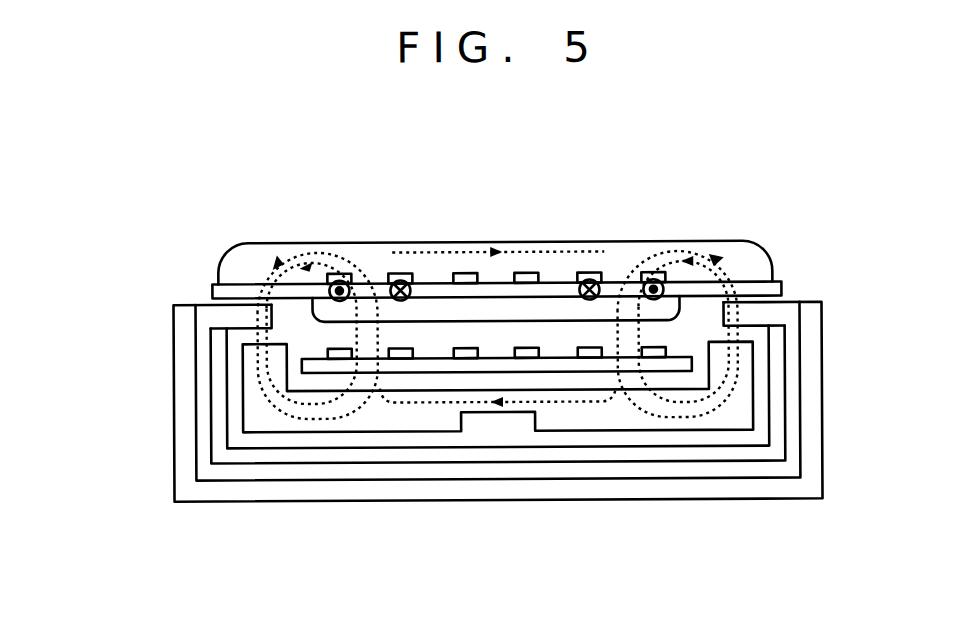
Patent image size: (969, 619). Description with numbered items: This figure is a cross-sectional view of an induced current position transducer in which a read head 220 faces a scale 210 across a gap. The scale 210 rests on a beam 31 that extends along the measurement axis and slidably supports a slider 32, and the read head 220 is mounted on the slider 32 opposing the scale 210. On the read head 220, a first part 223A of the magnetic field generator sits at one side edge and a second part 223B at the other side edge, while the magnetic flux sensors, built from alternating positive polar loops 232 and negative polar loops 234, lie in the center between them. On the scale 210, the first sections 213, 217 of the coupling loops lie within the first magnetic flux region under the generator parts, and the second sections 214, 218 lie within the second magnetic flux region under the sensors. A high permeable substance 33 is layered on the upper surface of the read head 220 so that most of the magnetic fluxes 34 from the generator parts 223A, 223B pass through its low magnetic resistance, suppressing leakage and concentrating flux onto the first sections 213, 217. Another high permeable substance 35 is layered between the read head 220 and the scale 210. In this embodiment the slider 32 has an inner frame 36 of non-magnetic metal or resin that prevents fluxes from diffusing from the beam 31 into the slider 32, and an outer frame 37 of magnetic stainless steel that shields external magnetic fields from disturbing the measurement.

The beam 31 is at (737, 413).
The slider 32 is at (212, 313).
The high permeable substance 33 is at (240, 258).
The magnetic fluxes 34 is at (250, 336).
The high permeable substance 35 is at (677, 318).
The inner frame 36 is at (427, 458).
The outer frame 37 is at (185, 427).
The scale 210 is at (543, 367).
The first section 213 is at (337, 360).
The second section 214 is at (467, 358).
The first section 217 is at (597, 360).
The second section 218 is at (527, 358).
The read head 220 is at (213, 293).
The first part of the magnetic field generator 223A is at (397, 272).
The second part of the magnetic field generator 223B is at (655, 275).
The positive polar loop 232 is at (465, 275).
The negative polar loop 234 is at (527, 275).